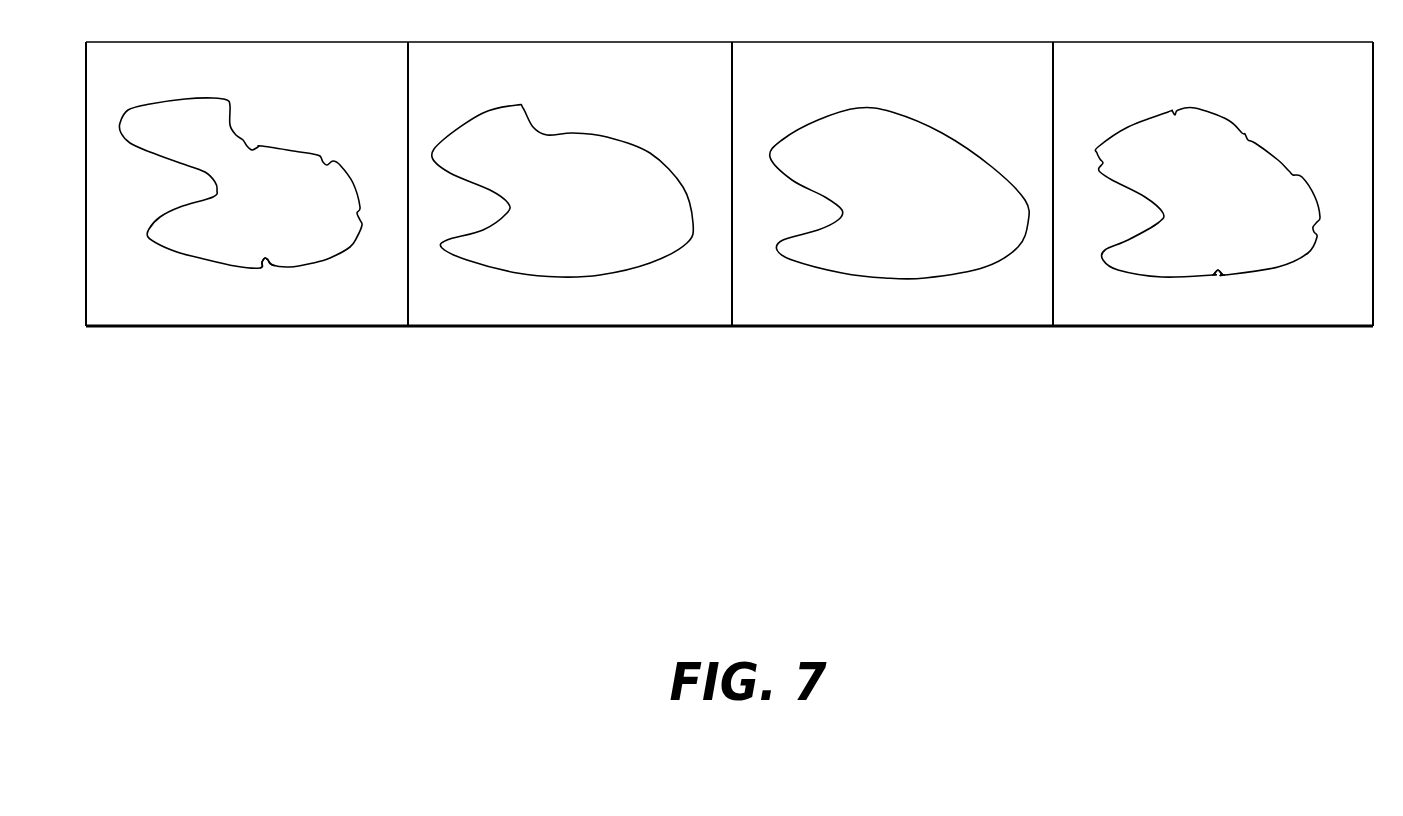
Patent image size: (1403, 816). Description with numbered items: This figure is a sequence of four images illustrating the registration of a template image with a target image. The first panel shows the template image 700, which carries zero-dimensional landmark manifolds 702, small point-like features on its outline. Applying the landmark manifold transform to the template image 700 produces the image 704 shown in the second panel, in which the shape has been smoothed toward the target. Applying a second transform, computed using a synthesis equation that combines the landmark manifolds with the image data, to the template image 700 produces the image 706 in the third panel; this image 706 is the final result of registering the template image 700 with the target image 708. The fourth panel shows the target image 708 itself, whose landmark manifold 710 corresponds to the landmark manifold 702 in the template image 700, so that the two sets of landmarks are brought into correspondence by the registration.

The template image 700 is at (168, 257).
The 0-dimensional landmark manifolds 702 is at (268, 273).
The image 704 is at (562, 278).
The image 706 is at (897, 286).
The target image 708 is at (1137, 275).
The landmark manifold 710 is at (1215, 280).